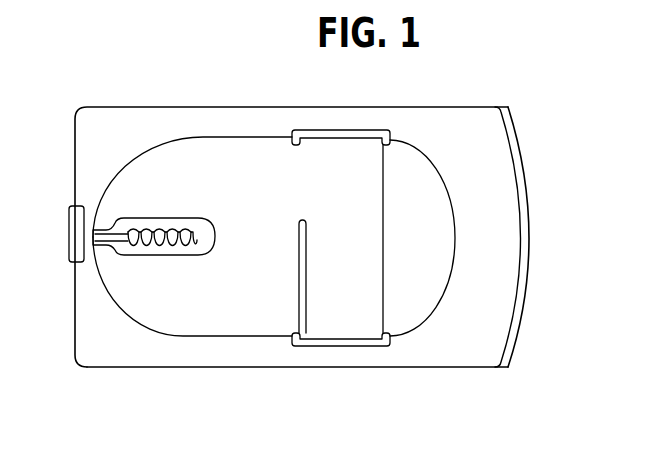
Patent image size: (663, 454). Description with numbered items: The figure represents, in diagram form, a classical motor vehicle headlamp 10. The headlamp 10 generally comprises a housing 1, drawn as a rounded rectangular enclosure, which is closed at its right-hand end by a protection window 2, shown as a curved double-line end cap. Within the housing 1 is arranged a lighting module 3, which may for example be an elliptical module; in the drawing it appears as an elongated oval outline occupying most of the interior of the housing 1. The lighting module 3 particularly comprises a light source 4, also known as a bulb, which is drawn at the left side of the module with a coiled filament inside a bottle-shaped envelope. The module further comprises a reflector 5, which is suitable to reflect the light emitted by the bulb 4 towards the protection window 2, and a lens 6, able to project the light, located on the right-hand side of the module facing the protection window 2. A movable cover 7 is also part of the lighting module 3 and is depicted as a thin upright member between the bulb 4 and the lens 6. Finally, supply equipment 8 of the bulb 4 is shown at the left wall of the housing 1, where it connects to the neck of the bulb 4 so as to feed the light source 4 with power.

The motor vehicle headlamp 10 is at (225, 88).
The housing 1 is at (214, 369).
The protection window 2 is at (525, 173).
The lighting module 3 is at (142, 327).
The light source 4 is at (170, 256).
The reflector 5 is at (140, 153).
The lens 6 is at (457, 216).
The movable cover 7 is at (307, 288).
The supply equipment 8 is at (67, 220).